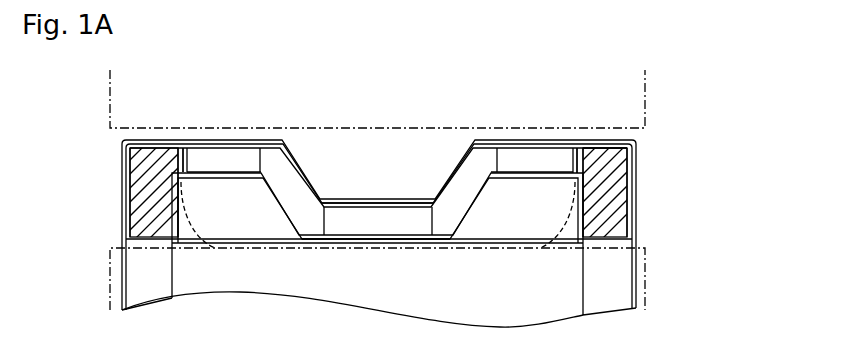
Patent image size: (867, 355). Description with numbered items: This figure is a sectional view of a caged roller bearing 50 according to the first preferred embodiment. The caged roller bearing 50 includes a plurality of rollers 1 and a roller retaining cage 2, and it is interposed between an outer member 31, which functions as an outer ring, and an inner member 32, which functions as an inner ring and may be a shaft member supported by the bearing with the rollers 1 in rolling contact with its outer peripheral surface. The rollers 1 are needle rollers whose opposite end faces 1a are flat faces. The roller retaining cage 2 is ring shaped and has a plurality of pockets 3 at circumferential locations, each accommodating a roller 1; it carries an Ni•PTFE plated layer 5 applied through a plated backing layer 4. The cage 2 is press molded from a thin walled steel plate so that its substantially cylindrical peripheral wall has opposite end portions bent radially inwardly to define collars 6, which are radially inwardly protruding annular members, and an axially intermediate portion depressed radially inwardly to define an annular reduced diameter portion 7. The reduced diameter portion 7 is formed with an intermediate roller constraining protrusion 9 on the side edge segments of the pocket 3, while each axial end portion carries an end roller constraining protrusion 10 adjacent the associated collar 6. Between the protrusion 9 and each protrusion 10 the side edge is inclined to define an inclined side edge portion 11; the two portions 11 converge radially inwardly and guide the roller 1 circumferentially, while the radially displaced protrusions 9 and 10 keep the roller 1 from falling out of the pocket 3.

The roller 1 is at (432, 130).
The end face 1a is at (178, 188).
The roller retaining cage 2 is at (618, 196).
The pocket 3 is at (183, 165).
The plated backing layer 4 is at (600, 147).
The Ni•PTFE plated layer 5 is at (582, 141).
The collar 6 is at (140, 212).
The reduced diameter portion 7 is at (380, 200).
The intermediate roller constraining protrusion 9 is at (372, 230).
The end roller constraining protrusion 10 is at (222, 170).
The inclined side edge portion 11 is at (290, 190).
The outer member 31 is at (110, 108).
The inner member 32 is at (110, 298).
The caged roller bearing 50 is at (683, 87).